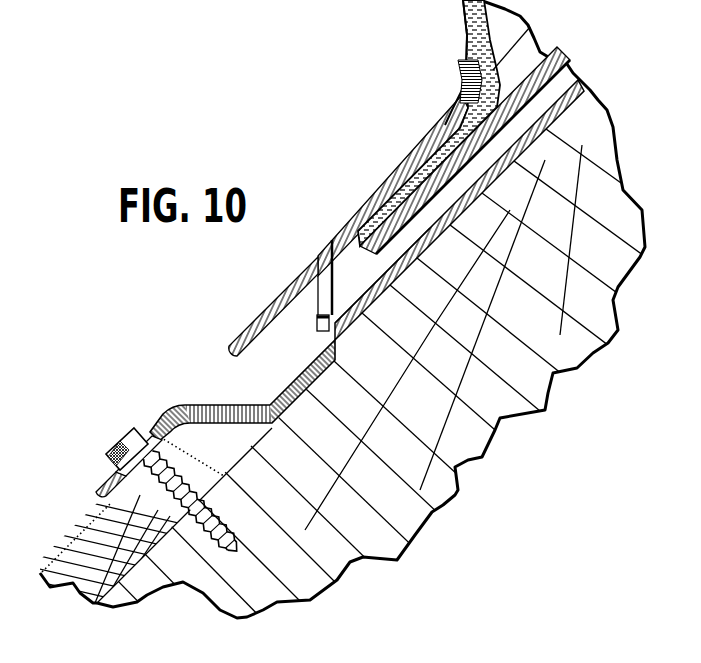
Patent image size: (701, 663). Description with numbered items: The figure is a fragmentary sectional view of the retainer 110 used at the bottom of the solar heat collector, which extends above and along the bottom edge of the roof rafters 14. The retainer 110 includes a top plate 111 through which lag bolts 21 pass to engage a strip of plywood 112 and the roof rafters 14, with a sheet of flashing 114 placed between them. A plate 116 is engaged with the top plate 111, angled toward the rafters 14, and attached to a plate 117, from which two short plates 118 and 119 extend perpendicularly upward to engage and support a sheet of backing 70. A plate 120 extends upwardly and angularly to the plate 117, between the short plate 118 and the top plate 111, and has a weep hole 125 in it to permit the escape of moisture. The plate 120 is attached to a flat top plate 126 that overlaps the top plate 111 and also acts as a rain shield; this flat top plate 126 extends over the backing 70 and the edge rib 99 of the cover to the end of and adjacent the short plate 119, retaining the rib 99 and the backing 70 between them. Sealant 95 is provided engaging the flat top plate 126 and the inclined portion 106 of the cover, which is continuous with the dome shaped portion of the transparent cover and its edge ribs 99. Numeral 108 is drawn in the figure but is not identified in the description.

The roof rafter 14 is at (514, 408).
The lag bolt 21 is at (117, 441).
The backing 70 is at (566, 70).
The sealant 95 is at (458, 83).
The edge rib 99 is at (413, 170).
The inclined portion 106 is at (530, 27).
The gasket 108 is at (453, 5).
The retainer 110 is at (415, 185).
The top plate 111 is at (157, 432).
The strip of plywood 112 is at (82, 532).
The sheet of flashing 114 is at (216, 467).
The plate 116 is at (196, 403).
The plate 117 is at (283, 393).
The short plate 118 is at (403, 244).
The short plate 119 is at (596, 102).
The plate 120 is at (316, 295).
The weep hole 125 is at (316, 328).
The flat top plate 126 is at (243, 338).